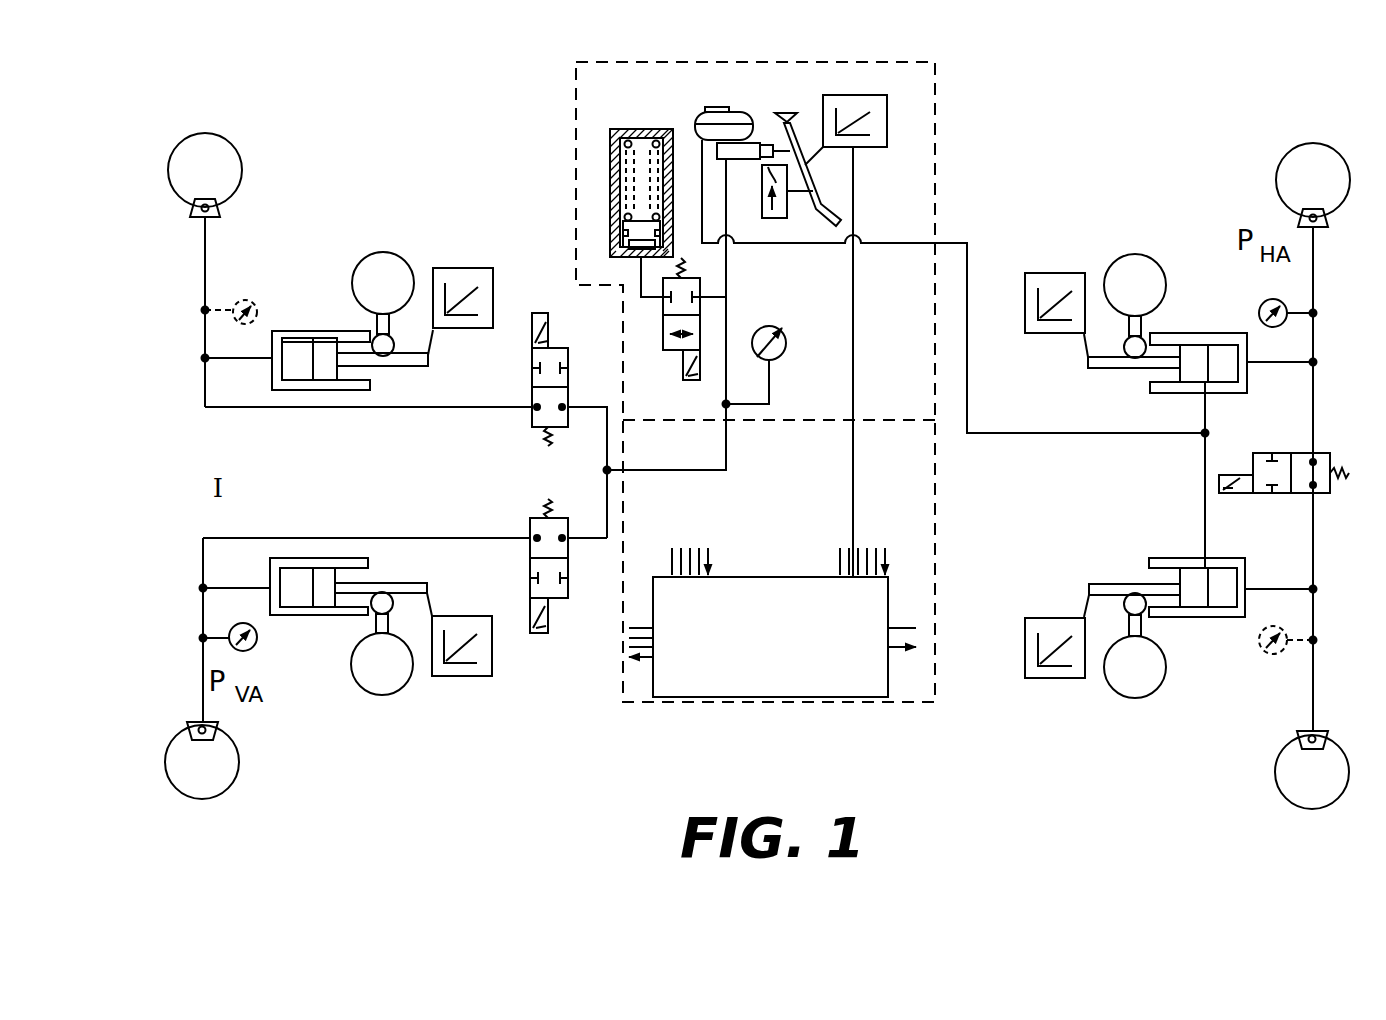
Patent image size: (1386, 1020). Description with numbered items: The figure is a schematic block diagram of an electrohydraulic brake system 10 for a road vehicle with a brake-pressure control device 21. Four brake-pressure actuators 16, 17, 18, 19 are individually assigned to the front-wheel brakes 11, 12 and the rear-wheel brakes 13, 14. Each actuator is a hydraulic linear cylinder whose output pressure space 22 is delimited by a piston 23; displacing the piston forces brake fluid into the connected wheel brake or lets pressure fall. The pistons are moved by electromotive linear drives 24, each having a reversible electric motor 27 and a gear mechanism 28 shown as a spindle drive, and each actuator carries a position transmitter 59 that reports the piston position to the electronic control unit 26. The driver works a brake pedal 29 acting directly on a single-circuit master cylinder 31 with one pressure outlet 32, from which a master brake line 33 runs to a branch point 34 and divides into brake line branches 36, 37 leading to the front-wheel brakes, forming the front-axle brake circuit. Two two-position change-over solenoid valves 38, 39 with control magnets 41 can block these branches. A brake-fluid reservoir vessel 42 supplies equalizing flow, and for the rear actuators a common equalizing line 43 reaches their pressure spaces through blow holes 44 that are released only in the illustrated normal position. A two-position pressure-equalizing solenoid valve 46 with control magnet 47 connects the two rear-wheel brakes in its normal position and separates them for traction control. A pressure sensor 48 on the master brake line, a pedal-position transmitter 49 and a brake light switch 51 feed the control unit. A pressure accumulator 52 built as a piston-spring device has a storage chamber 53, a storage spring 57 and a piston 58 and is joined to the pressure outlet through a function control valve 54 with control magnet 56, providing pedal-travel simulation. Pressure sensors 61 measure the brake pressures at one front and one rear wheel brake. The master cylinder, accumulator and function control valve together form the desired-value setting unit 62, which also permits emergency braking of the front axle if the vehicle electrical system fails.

The brake system 10 is at (371, 135).
The front-wheel brake 11 is at (222, 762).
The front-wheel brake 12 is at (232, 178).
The rear-wheel brake 13 is at (1286, 773).
The rear-wheel brake 14 is at (1297, 166).
The brake-pressure actuator 16 is at (258, 572).
The brake-pressure actuator 17 is at (258, 377).
The brake-pressure actuator 18 is at (1167, 553).
The brake-pressure actuator 19 is at (1170, 395).
The brake-pressure control device 21 is at (946, 185).
The output pressure space 22 is at (291, 343).
The piston 23 is at (328, 350).
The electromotive linear drive 24 is at (402, 252).
The electronic control unit 26 is at (777, 573).
The electric motor 27 is at (357, 268).
The gear mechanism 28 is at (402, 341).
The brake pedal 29 is at (819, 204).
The single-circuit master cylinder 31 is at (758, 136).
The pressure outlet 32 is at (728, 165).
The master brake line 33 is at (729, 468).
The branch point 34 is at (603, 470).
The brake line branch 36 is at (377, 537).
The brake line branch 37 is at (416, 408).
The change-over valve 38 is at (533, 523).
The change-over valve 39 is at (533, 416).
The control magnet 41 is at (544, 337).
The brake-fluid reservoir vessel 42 is at (712, 107).
The equalizing line 43 is at (969, 403).
The blow hole 44 is at (1206, 392).
The pressure-equalizing valve 46 is at (1328, 470).
The control magnet 47 is at (1245, 492).
The pressure sensor 48 is at (769, 325).
The pedal-position transmitter 49 is at (874, 127).
The brake light switch 51 is at (786, 218).
The pressure accumulator 52 is at (605, 172).
The storage chamber 53 is at (619, 257).
The function control valve 54 is at (672, 348).
The control magnet 56 is at (685, 379).
The storage spring 57 is at (638, 152).
The piston 58 is at (628, 216).
The position transmitter 59 is at (484, 300).
The pressure sensor 61 is at (243, 299).
The desired-value setting unit 62 is at (927, 94).